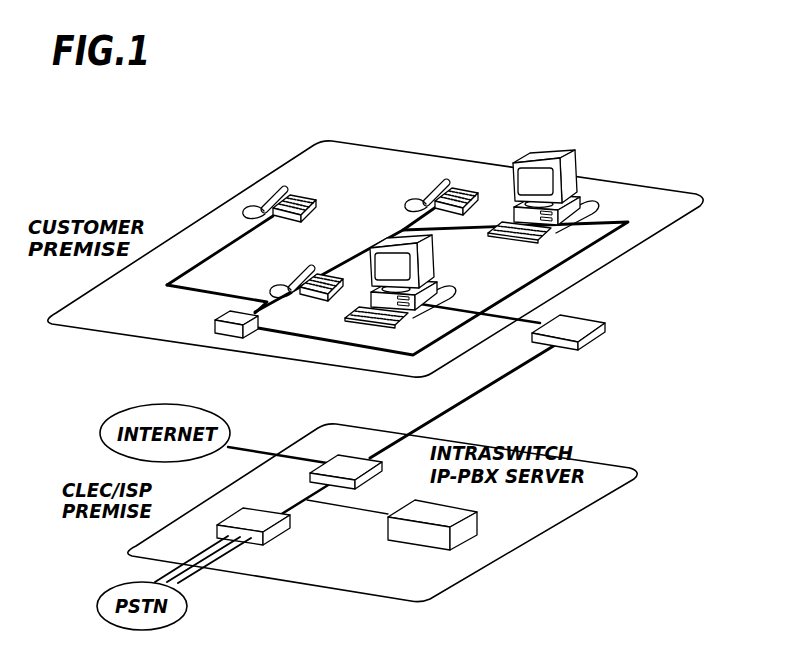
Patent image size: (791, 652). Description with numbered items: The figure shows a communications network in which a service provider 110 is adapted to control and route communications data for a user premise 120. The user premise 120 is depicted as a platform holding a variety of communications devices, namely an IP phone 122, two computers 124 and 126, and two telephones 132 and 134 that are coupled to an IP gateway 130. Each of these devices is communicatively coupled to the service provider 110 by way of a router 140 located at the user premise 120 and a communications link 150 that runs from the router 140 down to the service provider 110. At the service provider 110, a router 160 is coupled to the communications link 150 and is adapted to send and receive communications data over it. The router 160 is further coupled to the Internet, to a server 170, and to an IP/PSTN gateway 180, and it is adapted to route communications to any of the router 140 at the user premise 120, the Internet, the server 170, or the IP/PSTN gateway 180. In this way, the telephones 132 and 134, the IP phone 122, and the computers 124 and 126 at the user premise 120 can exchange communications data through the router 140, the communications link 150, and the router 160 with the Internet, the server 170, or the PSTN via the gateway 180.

The service provider 110 is at (496, 556).
The user premise 120 is at (400, 148).
The IP phone 122 is at (472, 182).
The computer 124 is at (554, 152).
The computer 126 is at (433, 257).
The IP gateway 130 is at (226, 337).
The telephone 132 is at (342, 268).
The telephone 134 is at (292, 192).
The router 140 is at (588, 320).
The communications link 150 is at (436, 410).
The router 160 is at (330, 450).
The server 170 is at (480, 521).
The IP/PSTN gateway 180 is at (279, 538).